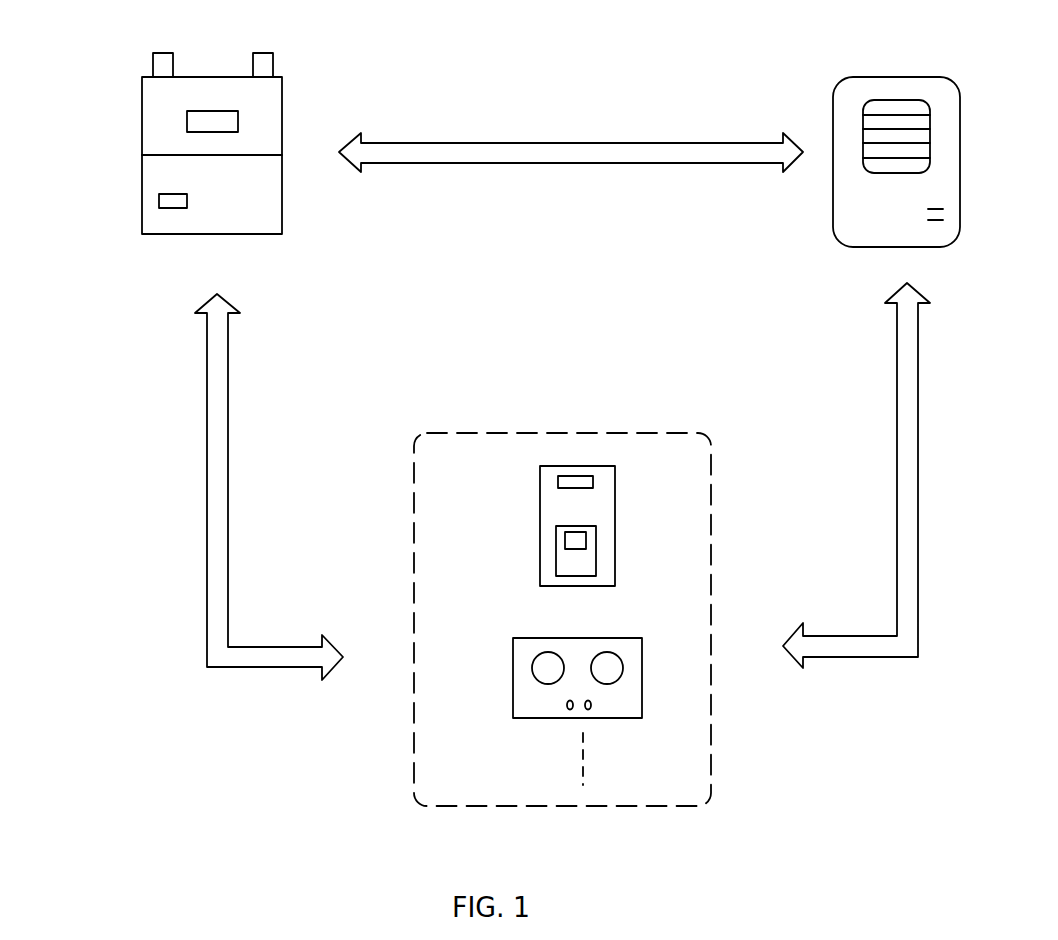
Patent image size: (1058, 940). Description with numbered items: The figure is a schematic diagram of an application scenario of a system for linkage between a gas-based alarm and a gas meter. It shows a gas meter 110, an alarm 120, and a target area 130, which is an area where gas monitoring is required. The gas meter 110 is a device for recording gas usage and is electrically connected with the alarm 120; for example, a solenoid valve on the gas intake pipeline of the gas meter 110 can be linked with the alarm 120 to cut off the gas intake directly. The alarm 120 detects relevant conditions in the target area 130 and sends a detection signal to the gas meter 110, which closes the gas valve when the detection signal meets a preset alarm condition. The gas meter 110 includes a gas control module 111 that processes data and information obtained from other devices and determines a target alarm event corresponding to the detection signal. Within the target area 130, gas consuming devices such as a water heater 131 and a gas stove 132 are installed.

The gas meter 110 is at (142, 97).
The gas control module 111 is at (159, 208).
The alarm 120 is at (833, 82).
The target area 130 is at (414, 488).
The water heater 131 is at (540, 538).
The gas stove 132 is at (533, 637).